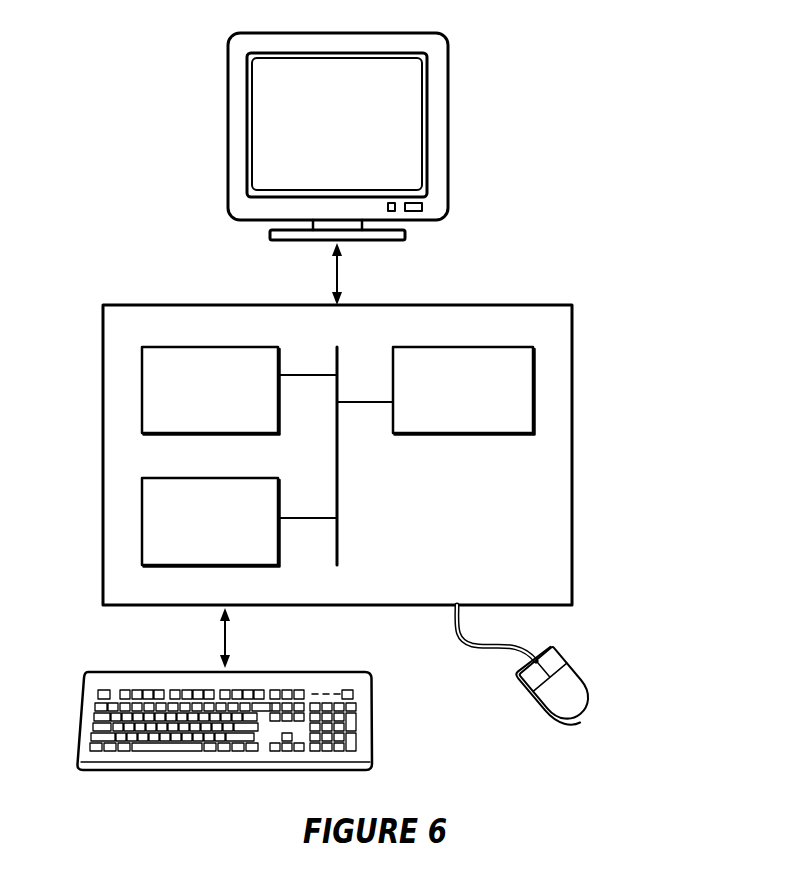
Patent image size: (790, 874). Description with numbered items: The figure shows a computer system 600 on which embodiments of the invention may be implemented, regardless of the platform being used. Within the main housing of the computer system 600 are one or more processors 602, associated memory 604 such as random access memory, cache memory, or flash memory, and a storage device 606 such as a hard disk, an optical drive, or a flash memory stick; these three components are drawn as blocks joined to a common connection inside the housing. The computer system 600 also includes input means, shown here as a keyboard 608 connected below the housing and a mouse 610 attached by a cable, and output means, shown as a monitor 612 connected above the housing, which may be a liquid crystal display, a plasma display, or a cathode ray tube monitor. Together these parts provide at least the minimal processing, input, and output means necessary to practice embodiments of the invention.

The computer system 600 is at (540, 129).
The processor 602 is at (482, 400).
The memory 604 is at (232, 400).
The storage device 606 is at (232, 530).
The keyboard 608 is at (307, 672).
The mouse 610 is at (576, 668).
The monitor 612 is at (358, 130).